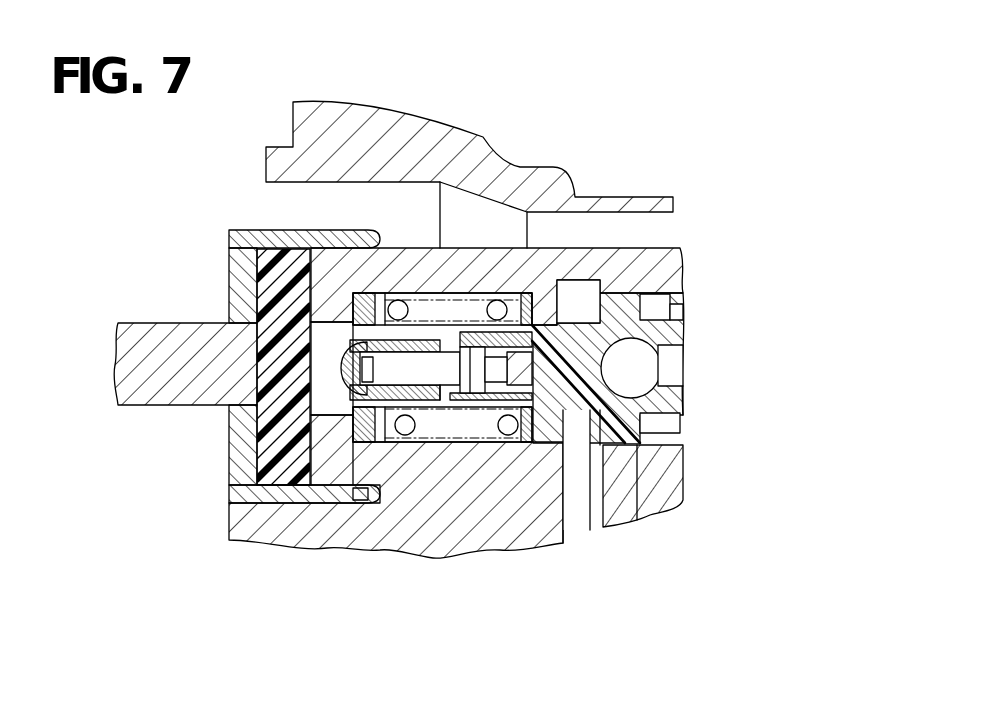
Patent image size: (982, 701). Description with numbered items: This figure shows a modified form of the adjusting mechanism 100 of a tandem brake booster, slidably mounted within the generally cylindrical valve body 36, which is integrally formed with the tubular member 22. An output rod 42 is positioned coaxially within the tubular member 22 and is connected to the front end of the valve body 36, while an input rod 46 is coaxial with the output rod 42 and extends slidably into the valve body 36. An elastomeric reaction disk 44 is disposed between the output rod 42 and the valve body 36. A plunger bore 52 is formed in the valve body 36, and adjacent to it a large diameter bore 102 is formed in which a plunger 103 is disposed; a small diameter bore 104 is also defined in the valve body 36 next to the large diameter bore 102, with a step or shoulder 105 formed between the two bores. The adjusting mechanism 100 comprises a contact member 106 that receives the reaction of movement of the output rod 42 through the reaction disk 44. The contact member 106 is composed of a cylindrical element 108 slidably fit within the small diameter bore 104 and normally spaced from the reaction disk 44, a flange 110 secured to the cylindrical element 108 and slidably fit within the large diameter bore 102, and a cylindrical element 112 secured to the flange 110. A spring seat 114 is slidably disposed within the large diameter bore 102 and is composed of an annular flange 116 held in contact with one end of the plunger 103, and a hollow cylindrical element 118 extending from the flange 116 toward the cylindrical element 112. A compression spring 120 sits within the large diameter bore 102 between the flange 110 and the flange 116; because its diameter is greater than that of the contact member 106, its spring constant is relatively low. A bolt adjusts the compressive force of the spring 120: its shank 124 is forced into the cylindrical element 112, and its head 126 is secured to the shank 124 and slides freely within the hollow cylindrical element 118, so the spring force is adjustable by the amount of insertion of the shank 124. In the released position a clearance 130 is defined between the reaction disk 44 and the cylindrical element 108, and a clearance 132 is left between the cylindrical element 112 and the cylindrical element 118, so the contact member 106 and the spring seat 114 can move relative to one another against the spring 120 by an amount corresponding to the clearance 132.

The tubular member 22 is at (378, 127).
The valve body 36 is at (677, 487).
The output rod 42 is at (123, 375).
The reaction disk 44 is at (280, 468).
The input rod 46 is at (668, 357).
The plunger bore 52 is at (677, 383).
The adjusting mechanism 100 is at (473, 293).
The large diameter bore 102 is at (443, 298).
The plunger 103 is at (577, 530).
The small diameter bore 104 is at (338, 325).
The step or shoulder 105 is at (392, 300).
The contact member 106 is at (333, 392).
The cylindrical element 108 is at (285, 325).
The flange 110 is at (313, 500).
The cylindrical element 112 is at (367, 497).
The spring seat 114 is at (470, 383).
The annular flange 116 is at (572, 295).
The hollow cylindrical element 118 is at (493, 403).
The compression spring 120 is at (498, 298).
The shank 124 is at (252, 545).
The head 126 is at (447, 390).
The clearance 130 is at (333, 347).
The clearance 132 is at (422, 398).